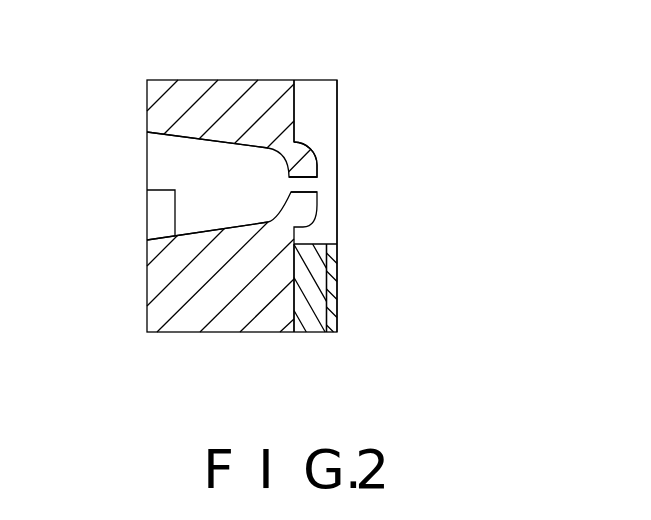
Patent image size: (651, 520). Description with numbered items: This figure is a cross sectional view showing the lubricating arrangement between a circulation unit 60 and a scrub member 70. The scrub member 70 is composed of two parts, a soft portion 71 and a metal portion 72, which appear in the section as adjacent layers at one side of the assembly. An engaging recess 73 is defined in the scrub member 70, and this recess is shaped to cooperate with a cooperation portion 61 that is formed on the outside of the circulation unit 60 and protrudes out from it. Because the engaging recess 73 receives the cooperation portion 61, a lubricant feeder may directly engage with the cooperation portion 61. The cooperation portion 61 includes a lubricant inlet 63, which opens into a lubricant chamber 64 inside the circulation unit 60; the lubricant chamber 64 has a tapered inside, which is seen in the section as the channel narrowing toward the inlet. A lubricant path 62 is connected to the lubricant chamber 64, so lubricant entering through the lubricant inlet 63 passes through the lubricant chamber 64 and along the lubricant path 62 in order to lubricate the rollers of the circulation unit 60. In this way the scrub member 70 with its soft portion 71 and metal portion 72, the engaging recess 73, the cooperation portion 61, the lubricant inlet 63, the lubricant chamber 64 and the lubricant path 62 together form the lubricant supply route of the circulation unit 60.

The circulation unit 60 is at (190, 80).
The engaging recess 73 is at (312, 95).
The scrub member 70 is at (337, 108).
The cooperation portion 61 is at (312, 157).
The lubricant inlet 63 is at (310, 185).
The soft portion 71 is at (332, 268).
The metal portion 72 is at (318, 303).
The lubricant chamber 64 is at (175, 163).
The lubricant path 62 is at (158, 222).